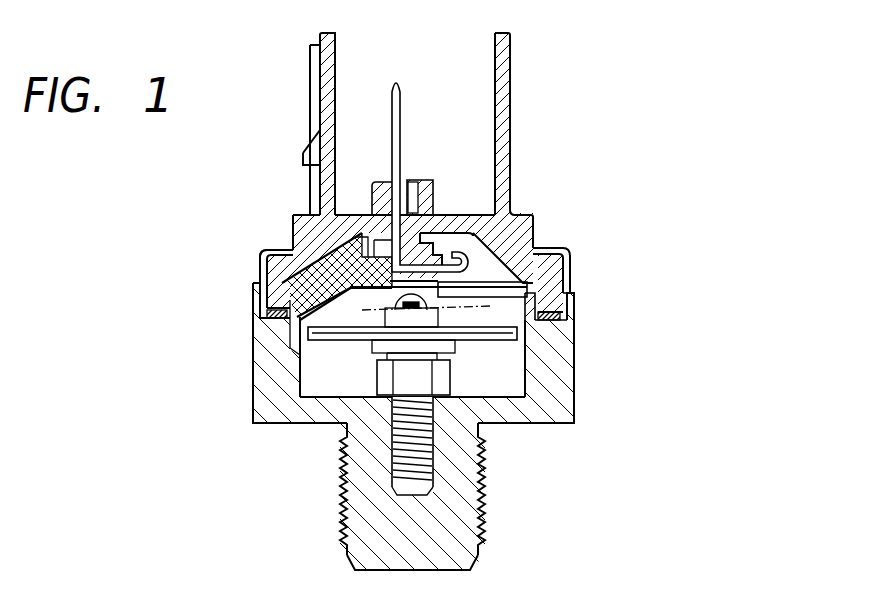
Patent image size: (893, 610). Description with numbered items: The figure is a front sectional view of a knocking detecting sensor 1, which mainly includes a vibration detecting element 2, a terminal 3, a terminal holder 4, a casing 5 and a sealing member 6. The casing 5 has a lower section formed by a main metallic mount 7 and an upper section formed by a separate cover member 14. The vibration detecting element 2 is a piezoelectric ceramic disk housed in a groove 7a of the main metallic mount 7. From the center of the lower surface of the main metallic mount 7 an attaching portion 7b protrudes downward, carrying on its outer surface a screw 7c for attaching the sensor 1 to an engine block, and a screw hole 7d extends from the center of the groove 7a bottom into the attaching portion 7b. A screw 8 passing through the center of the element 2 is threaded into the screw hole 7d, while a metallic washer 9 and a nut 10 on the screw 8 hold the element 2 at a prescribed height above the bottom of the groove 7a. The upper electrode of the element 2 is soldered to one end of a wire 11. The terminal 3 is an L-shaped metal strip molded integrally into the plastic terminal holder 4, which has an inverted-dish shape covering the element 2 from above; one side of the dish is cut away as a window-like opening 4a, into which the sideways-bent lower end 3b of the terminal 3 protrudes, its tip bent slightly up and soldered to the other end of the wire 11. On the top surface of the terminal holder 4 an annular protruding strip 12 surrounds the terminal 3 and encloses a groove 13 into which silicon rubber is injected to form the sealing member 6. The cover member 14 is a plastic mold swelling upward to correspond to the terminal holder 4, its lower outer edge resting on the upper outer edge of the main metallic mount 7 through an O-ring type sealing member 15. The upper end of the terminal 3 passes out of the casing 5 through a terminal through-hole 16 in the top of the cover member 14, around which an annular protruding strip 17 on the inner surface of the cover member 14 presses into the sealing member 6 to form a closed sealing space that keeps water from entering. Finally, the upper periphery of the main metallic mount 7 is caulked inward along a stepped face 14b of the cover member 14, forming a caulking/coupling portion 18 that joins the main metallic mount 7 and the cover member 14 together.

The knocking detecting sensor 1 is at (430, 293).
The vibration detecting element 2 is at (527, 363).
The terminal 3 is at (400, 106).
The lower end of the terminal 3b is at (523, 216).
The terminal holder 4 is at (300, 297).
The window-like opening 4a is at (572, 292).
The casing 5 is at (585, 222).
The sealing member 6 is at (382, 213).
The main metallic mount 7 is at (575, 395).
The groove 7a is at (382, 382).
The attaching portion 7b is at (463, 553).
The screw 7c is at (483, 497).
The screw hole 7d is at (397, 480).
The screw 8 is at (330, 340).
The metallic washer 9 is at (383, 380).
The nut 10 is at (397, 440).
The wire 11 is at (577, 278).
The annular-shape protruding strip 12 is at (357, 250).
The groove 13 is at (420, 240).
The cover member 14 is at (276, 266).
The stepped face 14b is at (563, 248).
The sealing member 15 is at (276, 320).
The terminal through-hole 16 is at (397, 177).
The annular protruding strip 17 is at (270, 305).
The caulking/coupling portion 18 is at (278, 245).